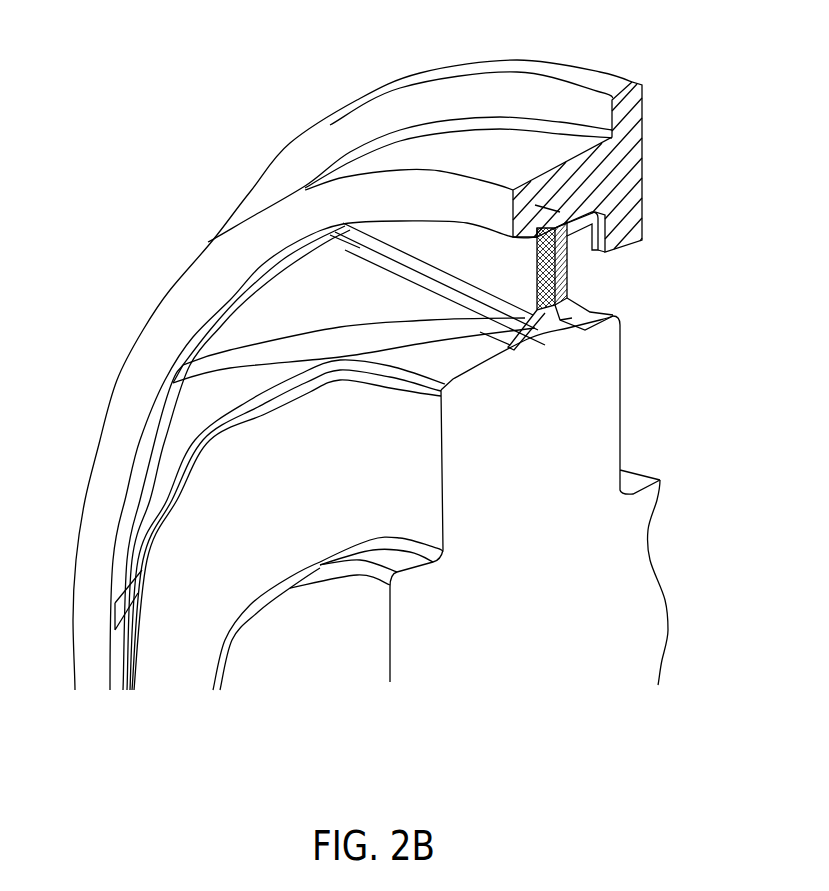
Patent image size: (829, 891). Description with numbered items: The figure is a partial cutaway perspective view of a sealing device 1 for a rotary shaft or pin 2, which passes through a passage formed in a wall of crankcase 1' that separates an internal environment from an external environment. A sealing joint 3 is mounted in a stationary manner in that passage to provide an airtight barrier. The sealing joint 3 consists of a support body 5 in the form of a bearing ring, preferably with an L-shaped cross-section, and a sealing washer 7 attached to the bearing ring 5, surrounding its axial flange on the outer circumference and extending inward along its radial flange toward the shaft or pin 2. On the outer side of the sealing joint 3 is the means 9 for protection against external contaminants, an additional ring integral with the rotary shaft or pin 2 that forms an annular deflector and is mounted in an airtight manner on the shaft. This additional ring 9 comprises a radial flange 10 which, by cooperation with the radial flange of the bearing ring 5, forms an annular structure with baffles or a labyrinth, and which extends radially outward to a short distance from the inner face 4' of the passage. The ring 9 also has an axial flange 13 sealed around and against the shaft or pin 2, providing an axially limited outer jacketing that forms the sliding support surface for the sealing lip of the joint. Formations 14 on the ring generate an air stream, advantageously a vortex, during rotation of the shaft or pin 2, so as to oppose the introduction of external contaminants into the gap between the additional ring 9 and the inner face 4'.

The sealing device 1 is at (646, 291).
The wall of crankcase 1' is at (614, 167).
The rotary shaft or pin 2 is at (630, 585).
The sealing joint 3 is at (672, 238).
The inner face of the passage 4' is at (483, 118).
The support body 5 is at (568, 262).
The sealing washer 7 is at (572, 282).
The means for protection against external contaminants 9 is at (680, 292).
The radial flange 10 is at (562, 299).
The axial flange 13 is at (553, 328).
The formations 14 is at (362, 240).